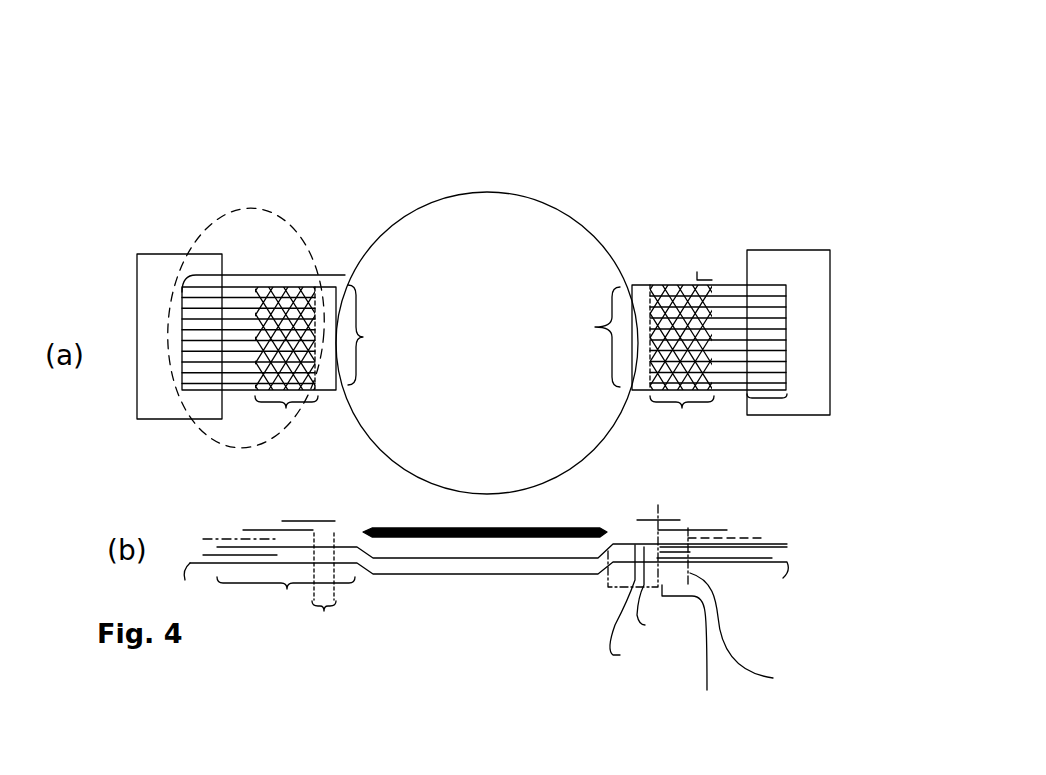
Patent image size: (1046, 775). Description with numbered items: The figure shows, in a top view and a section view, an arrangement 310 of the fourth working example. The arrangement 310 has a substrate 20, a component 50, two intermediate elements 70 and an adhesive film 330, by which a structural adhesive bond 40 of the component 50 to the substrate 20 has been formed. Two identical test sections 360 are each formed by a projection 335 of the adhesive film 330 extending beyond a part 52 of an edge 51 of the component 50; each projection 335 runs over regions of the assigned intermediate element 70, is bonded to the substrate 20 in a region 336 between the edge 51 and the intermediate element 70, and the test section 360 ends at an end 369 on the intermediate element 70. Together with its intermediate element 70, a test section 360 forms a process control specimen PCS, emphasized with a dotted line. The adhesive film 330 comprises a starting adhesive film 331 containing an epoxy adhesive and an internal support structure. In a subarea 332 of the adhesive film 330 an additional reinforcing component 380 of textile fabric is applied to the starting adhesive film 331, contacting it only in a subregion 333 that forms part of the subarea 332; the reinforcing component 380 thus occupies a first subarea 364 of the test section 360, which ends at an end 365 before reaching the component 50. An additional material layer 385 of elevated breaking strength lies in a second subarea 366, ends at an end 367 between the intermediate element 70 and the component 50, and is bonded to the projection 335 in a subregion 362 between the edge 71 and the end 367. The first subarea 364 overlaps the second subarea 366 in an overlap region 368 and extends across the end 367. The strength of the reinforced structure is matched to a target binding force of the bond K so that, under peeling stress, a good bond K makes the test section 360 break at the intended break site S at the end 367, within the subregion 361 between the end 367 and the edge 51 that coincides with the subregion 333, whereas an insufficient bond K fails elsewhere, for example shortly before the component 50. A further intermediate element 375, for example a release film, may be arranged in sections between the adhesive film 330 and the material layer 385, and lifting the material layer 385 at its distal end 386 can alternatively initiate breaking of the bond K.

The arrangement 310 is at (732, 109).
The intermediate element 70 is at (160, 253).
The edge 71 is at (737, 262).
The substrate 20 is at (390, 210).
The component 50 is at (540, 205).
The edge 51 is at (340, 413).
The part 52 is at (484, 336).
The test section 360 is at (313, 286).
The subregion 361 is at (690, 272).
The additional material layer 385 is at (240, 287).
The additional reinforcing component 380 is at (292, 282).
The adhesive film 330 is at (643, 283).
The starting adhesive film 331 is at (643, 611).
The subarea 332 is at (273, 419).
The subregion 333 is at (514, 526).
The projection 335 is at (287, 589).
The region 336 is at (705, 659).
The subregion 362 is at (760, 637).
The first subarea 364 is at (697, 272).
The end 365 is at (633, 392).
The second subarea 366 is at (733, 400).
The end 367 is at (720, 363).
The overlap region 368 is at (678, 506).
The end 369 is at (747, 547).
The further intermediate element 375 is at (232, 538).
The distal end 386 is at (735, 512).
The structural adhesive bond 40 is at (424, 592).
The intended break site S is at (272, 266).
The process control specimen PCS is at (248, 207).
The bond K is at (504, 578).